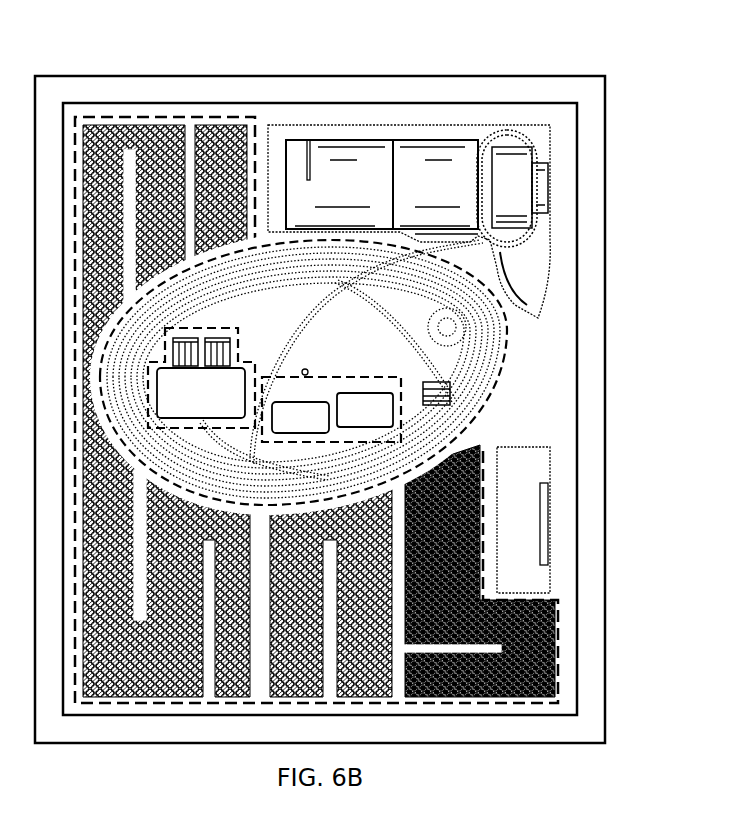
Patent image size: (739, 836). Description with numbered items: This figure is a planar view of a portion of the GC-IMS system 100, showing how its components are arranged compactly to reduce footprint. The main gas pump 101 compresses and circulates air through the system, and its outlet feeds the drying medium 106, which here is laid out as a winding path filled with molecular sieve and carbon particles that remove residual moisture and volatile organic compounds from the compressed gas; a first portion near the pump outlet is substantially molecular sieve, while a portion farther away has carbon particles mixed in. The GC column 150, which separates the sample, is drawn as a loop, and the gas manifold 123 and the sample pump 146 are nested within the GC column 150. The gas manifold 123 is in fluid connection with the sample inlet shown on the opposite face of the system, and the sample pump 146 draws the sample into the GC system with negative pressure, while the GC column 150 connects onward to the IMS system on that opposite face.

The GC-IMS system 100 is at (226, 42).
The main gas pump 101 is at (421, 142).
The drying medium 106 is at (133, 108).
The gas manifold 123 is at (220, 324).
The sample pump 146 is at (346, 370).
The GC column 150 is at (503, 386).